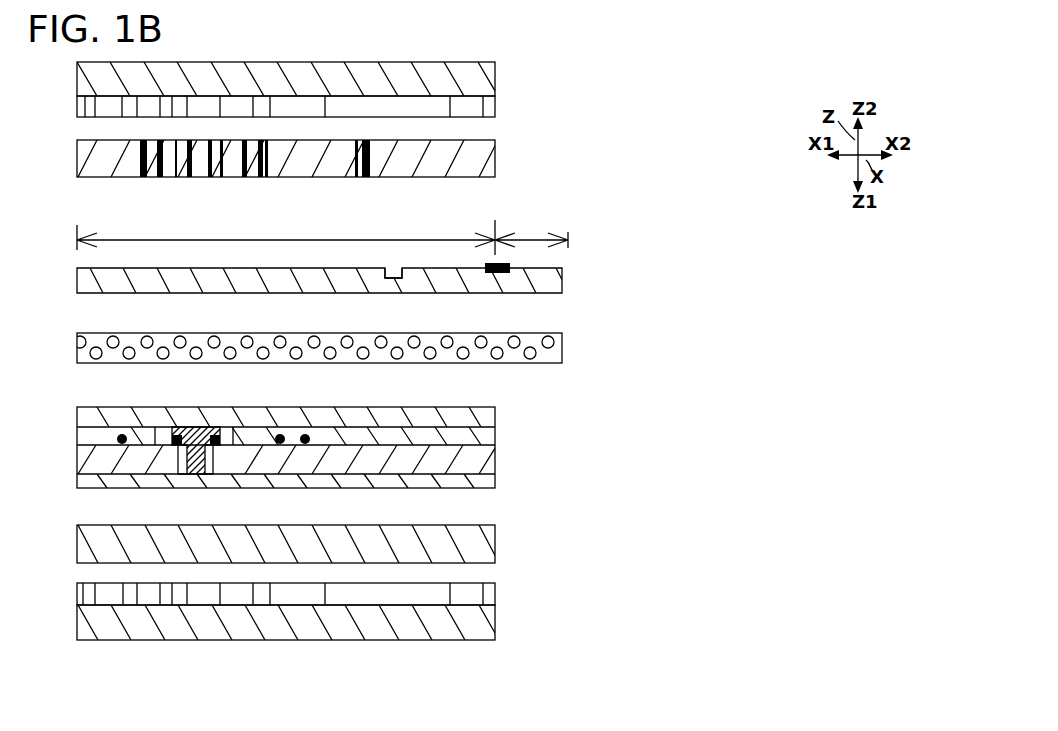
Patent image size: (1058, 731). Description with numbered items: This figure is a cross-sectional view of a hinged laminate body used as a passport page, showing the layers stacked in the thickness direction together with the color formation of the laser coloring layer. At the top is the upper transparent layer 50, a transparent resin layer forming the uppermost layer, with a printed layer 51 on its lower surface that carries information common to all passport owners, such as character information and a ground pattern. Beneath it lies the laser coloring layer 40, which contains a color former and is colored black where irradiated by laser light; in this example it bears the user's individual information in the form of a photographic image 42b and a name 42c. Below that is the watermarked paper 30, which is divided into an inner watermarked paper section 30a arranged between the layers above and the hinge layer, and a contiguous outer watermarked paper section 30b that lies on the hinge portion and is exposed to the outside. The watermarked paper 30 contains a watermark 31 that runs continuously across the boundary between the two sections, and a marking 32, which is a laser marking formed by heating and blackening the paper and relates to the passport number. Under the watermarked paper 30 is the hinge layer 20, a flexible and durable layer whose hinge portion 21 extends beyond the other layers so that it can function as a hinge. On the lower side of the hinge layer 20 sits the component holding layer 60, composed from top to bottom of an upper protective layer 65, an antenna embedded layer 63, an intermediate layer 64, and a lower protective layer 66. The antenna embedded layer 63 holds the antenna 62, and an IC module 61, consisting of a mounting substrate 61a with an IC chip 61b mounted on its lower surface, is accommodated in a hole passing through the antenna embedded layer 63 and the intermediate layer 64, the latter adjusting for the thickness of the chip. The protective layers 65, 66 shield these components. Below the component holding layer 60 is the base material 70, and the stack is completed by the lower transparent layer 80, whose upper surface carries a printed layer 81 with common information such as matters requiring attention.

The upper transparent layer 50 is at (492, 78).
The printed layer 51 is at (490, 103).
The laser coloring layer 40 is at (429, 177).
The photographic image 42b is at (155, 177).
The name 42c is at (357, 177).
The inner watermarked paper section 30a is at (286, 235).
The outer watermarked paper section 30b is at (531, 229).
The watermark 31 is at (393, 270).
The marking 32 is at (503, 264).
The watermarked paper 30 is at (449, 248).
The hinge layer 20 is at (421, 342).
The hinge portion 21 is at (535, 358).
The component holding layer 60 is at (504, 444).
The upper protective layer 65 is at (483, 418).
The antenna embedded layer 63 is at (286, 424).
The intermediate layer 64 is at (483, 470).
The lower protective layer 66 is at (483, 483).
The IC module 61 is at (197, 424).
The mounting substrate 61a is at (185, 432).
The IC chip 61b is at (214, 456).
The antenna 62 is at (307, 433).
The base material 70 is at (485, 540).
The printed layer 81 is at (487, 593).
The lower transparent layer 80 is at (485, 622).